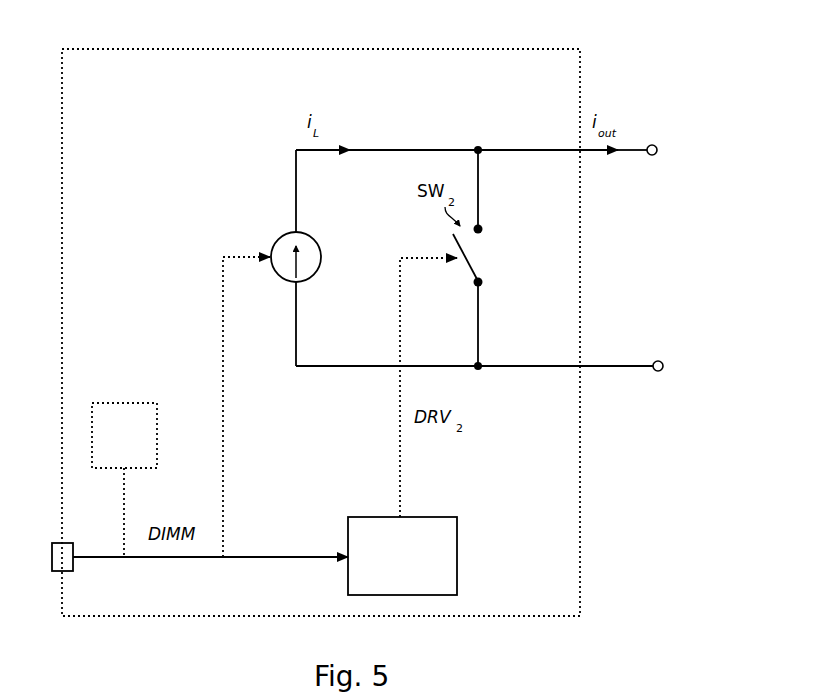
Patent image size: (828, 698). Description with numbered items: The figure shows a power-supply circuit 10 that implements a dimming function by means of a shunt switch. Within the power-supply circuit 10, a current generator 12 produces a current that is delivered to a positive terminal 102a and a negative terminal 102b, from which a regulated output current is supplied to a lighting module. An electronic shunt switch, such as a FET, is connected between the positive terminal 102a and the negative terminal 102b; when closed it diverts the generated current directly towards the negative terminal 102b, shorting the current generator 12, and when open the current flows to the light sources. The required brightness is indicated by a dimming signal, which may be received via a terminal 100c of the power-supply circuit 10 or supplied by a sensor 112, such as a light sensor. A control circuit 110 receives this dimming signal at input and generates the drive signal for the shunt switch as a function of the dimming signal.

The power-supply circuit 10 is at (560, 45).
The current generator 12 is at (284, 236).
The positive terminal 102a is at (656, 143).
The negative terminal 102b is at (661, 357).
The control circuit 110 is at (427, 525).
The sensor 112 is at (117, 416).
The terminal 100c is at (55, 578).